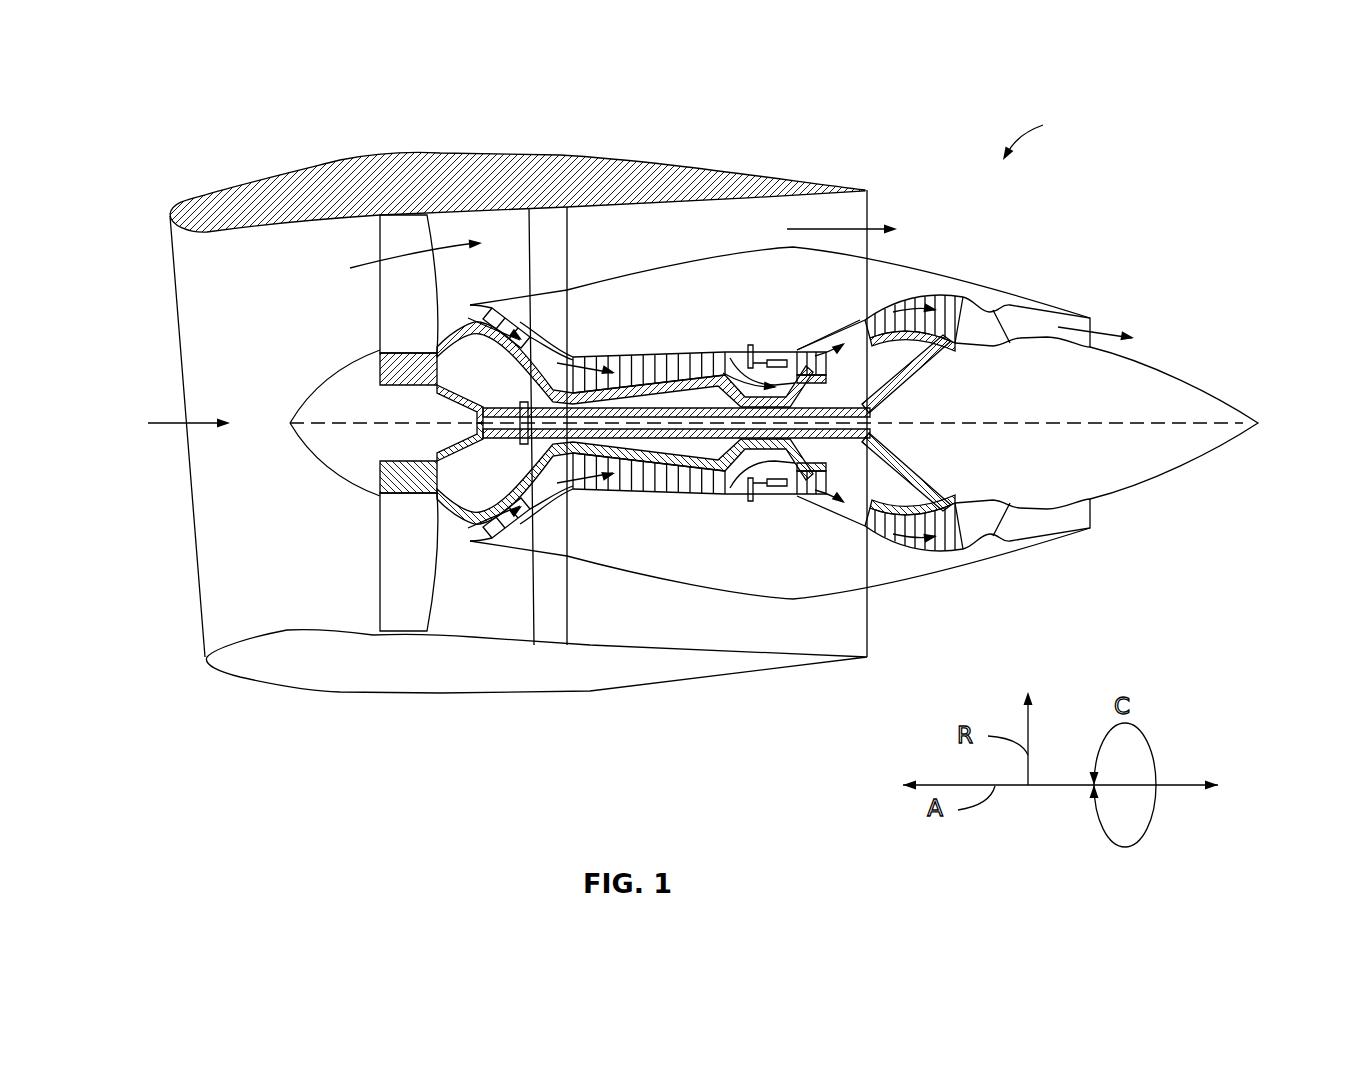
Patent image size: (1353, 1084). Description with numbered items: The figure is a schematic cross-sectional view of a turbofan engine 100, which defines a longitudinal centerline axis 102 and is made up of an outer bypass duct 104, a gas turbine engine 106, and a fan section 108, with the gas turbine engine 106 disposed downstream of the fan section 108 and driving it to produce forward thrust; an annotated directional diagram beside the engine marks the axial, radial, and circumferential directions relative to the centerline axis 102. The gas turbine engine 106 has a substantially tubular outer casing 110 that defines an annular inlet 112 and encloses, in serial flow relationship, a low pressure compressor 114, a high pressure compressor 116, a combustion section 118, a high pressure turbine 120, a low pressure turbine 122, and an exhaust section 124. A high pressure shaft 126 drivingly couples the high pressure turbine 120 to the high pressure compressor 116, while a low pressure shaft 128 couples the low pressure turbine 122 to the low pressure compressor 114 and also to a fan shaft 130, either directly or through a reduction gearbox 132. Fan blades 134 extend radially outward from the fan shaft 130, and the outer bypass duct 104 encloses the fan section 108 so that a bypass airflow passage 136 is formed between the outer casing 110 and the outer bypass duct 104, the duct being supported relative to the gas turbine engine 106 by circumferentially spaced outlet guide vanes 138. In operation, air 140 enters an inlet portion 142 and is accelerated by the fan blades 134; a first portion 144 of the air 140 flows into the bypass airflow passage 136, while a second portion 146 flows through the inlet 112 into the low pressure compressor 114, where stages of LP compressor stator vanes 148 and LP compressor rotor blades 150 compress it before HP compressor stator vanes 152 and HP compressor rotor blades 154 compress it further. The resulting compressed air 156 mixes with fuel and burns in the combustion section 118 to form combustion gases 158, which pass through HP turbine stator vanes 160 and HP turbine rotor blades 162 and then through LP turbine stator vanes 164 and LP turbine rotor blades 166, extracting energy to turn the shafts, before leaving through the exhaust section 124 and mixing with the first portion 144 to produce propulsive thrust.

The turbofan engine 100 is at (1044, 134).
The centerline axis 102 is at (1013, 421).
The outer bypass duct 104 is at (440, 152).
The gas turbine engine 106 is at (699, 300).
The fan section 108 is at (300, 289).
The outer casing 110 is at (717, 585).
The annular inlet 112 is at (477, 532).
The low pressure compressor 114 is at (525, 510).
The high pressure compressor 116 is at (605, 497).
The combustion section 118 is at (762, 505).
The high pressure turbine 120 is at (878, 467).
The low pressure turbine 122 is at (951, 556).
The exhaust section 124 is at (1097, 320).
The high pressure shaft 126 is at (808, 398).
The low pressure shaft 128 is at (530, 402).
The fan shaft 130 is at (432, 390).
The reduction gearbox 132 is at (537, 470).
The fan blades 134 is at (380, 560).
The bypass airflow passage 136 is at (678, 237).
The outlet guide vanes 138 is at (773, 168).
The air 140 is at (195, 415).
The inlet portion 142 is at (200, 633).
The first portion of the air 144 is at (385, 258).
The second portion of the air 146 is at (470, 318).
The LP compressor stator vanes 148 is at (493, 535).
The LP compressor rotor blades 150 is at (495, 535).
The HP compressor stator vanes 152 is at (695, 483).
The HP compressor rotor blades 154 is at (697, 482).
The compressed air 156 is at (746, 362).
The combustion gases 158 is at (812, 353).
The HP turbine stator vanes 160 is at (806, 487).
The HP turbine rotor blades 162 is at (806, 472).
The LP turbine stator vanes 164 is at (872, 308).
The LP turbine rotor blades 166 is at (886, 300).